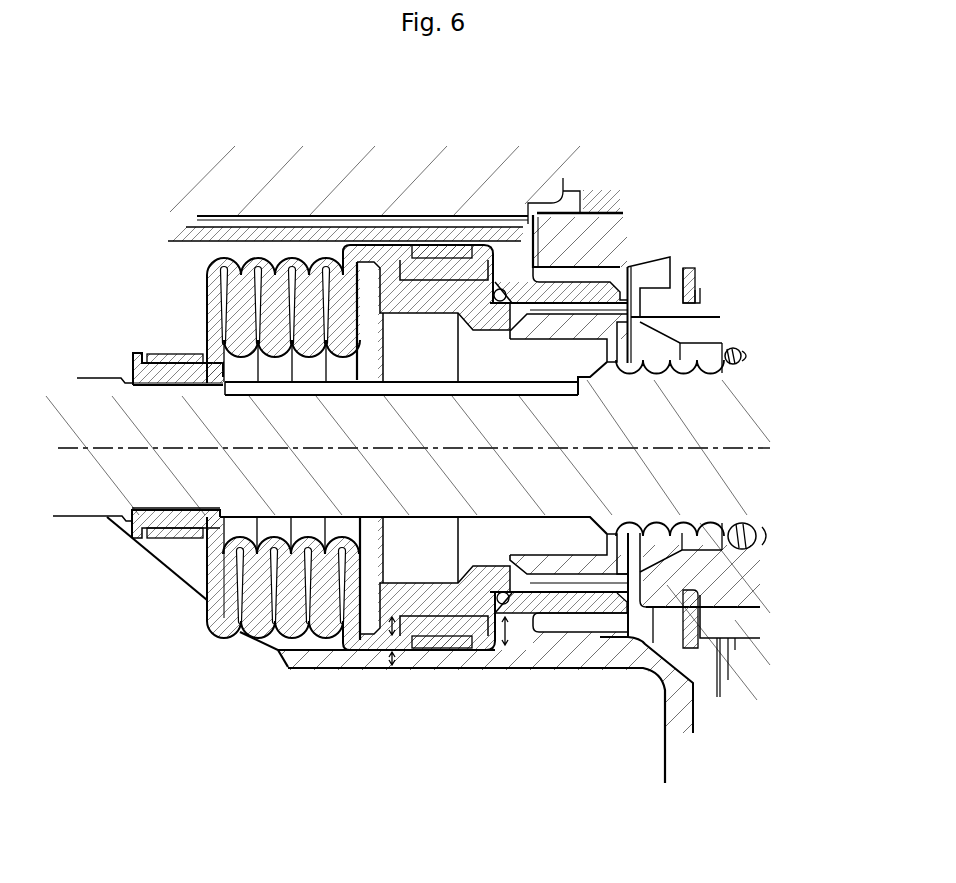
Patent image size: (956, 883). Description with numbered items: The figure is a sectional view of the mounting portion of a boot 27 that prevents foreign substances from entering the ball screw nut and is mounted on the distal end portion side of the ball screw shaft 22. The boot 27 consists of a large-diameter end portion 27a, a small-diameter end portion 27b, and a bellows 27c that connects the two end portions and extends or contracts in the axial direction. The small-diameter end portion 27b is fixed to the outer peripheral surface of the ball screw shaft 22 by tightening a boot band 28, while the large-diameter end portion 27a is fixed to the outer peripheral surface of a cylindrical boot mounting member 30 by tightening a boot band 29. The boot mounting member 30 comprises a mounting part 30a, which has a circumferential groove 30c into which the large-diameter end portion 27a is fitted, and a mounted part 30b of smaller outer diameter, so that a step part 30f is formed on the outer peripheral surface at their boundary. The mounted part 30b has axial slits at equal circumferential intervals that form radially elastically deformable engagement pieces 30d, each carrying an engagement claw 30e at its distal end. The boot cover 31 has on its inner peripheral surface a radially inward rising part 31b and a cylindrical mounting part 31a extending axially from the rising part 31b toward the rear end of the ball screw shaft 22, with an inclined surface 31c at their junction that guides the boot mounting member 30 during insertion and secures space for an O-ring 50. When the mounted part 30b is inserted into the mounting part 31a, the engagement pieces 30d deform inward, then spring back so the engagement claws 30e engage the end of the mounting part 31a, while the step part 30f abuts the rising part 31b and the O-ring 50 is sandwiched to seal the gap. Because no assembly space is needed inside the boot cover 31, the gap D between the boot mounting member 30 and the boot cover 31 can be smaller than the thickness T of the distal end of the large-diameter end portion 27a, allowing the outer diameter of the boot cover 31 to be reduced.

The ball screw shaft 22 is at (113, 392).
The boot 27 is at (280, 635).
The large-diameter end portion 27a is at (437, 620).
The small-diameter end portion 27b is at (170, 524).
The bellows 27c is at (300, 630).
The boot band 28 is at (188, 538).
The boot band 29 is at (440, 636).
The boot mounting member 30 is at (340, 275).
The mounting part 30a is at (385, 247).
The mounted part 30b is at (545, 268).
The groove 30c is at (455, 268).
The engagement pieces 30d is at (575, 312).
The engagement claw 30e is at (630, 320).
The step part 30f is at (506, 287).
The boot cover 31 is at (347, 660).
The mounting part 31a is at (590, 607).
The rising part 31b is at (523, 633).
The inclined surface 31c is at (530, 616).
The O-ring 50 is at (501, 591).
The gap D is at (393, 667).
The thickness T is at (528, 630).